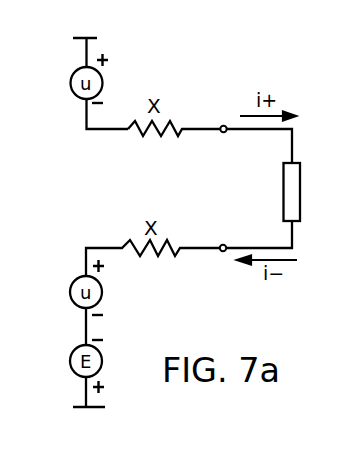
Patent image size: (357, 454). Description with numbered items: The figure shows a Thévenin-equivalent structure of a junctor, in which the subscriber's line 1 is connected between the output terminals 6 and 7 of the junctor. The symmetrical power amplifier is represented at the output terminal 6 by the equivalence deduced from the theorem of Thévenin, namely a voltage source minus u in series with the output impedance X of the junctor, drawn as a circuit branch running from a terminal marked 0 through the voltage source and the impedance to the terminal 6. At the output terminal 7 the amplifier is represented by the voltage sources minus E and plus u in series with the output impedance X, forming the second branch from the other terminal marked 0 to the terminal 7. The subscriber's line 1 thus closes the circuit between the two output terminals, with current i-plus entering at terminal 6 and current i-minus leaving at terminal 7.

The terminal 0 is at (80, 223).
The subscriber's line 1 is at (292, 190).
The output terminal 6 is at (226, 126).
The output terminal 7 is at (225, 251).